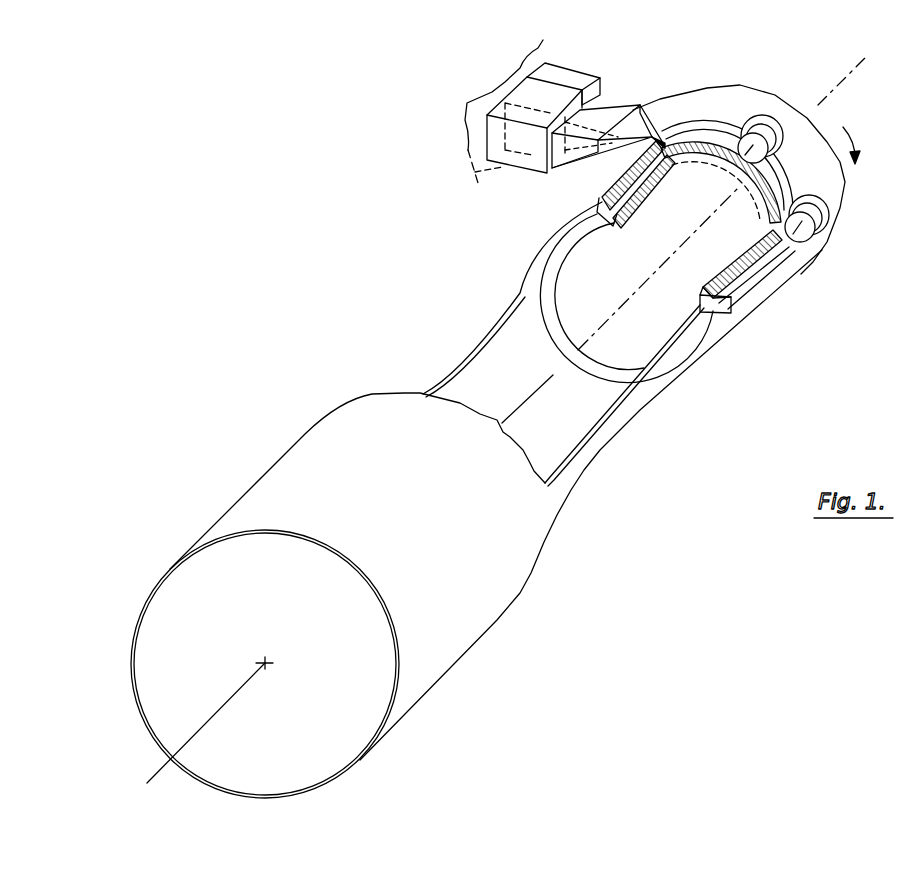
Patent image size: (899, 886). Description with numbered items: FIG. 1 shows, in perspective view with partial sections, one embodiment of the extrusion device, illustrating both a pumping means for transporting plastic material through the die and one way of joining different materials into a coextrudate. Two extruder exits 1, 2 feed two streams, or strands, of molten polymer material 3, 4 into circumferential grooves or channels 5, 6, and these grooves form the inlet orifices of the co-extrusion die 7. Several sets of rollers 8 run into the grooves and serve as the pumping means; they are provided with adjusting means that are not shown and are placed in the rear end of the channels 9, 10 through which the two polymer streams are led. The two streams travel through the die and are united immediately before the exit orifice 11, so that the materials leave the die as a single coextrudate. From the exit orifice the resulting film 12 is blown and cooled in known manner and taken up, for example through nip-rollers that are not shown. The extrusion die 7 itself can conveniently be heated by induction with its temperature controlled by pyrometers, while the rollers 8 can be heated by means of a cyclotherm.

The extruder exit 1 is at (522, 157).
The extruder exit 2 is at (575, 78).
The molten polymer material 3 is at (618, 147).
The molten polymer material 4 is at (662, 126).
The circumferential groove 5 is at (777, 162).
The circumferential groove 6 is at (721, 127).
The co-extrusion die 7 is at (755, 296).
The rollers 8 is at (778, 133).
The channel 9 is at (602, 203).
The channel 10 is at (648, 203).
The exit orifice 11 is at (553, 247).
The film 12 is at (578, 468).